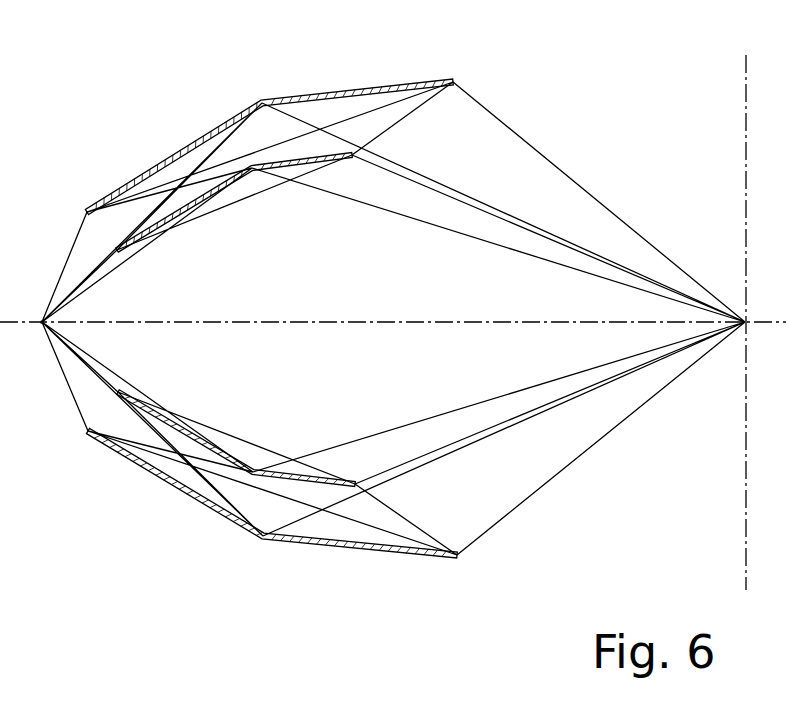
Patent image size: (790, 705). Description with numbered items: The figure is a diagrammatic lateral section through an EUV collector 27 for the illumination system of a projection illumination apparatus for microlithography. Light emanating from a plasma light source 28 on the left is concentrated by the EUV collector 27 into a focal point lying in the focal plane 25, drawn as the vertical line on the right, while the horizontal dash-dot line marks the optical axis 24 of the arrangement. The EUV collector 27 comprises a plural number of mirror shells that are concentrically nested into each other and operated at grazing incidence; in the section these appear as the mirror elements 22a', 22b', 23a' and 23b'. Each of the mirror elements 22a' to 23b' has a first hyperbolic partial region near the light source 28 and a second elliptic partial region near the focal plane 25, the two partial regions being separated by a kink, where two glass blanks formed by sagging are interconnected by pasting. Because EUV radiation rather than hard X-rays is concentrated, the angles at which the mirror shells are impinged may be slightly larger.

The EUV collector 27 is at (98, 170).
The mirror element 22a' is at (269, 121).
The mirror element 22b' is at (234, 208).
The mirror element 23a' is at (272, 521).
The mirror element 23b' is at (236, 435).
The optical axis 24 is at (502, 321).
The focal plane 25 is at (745, 124).
The plasma light source 28 is at (42, 326).